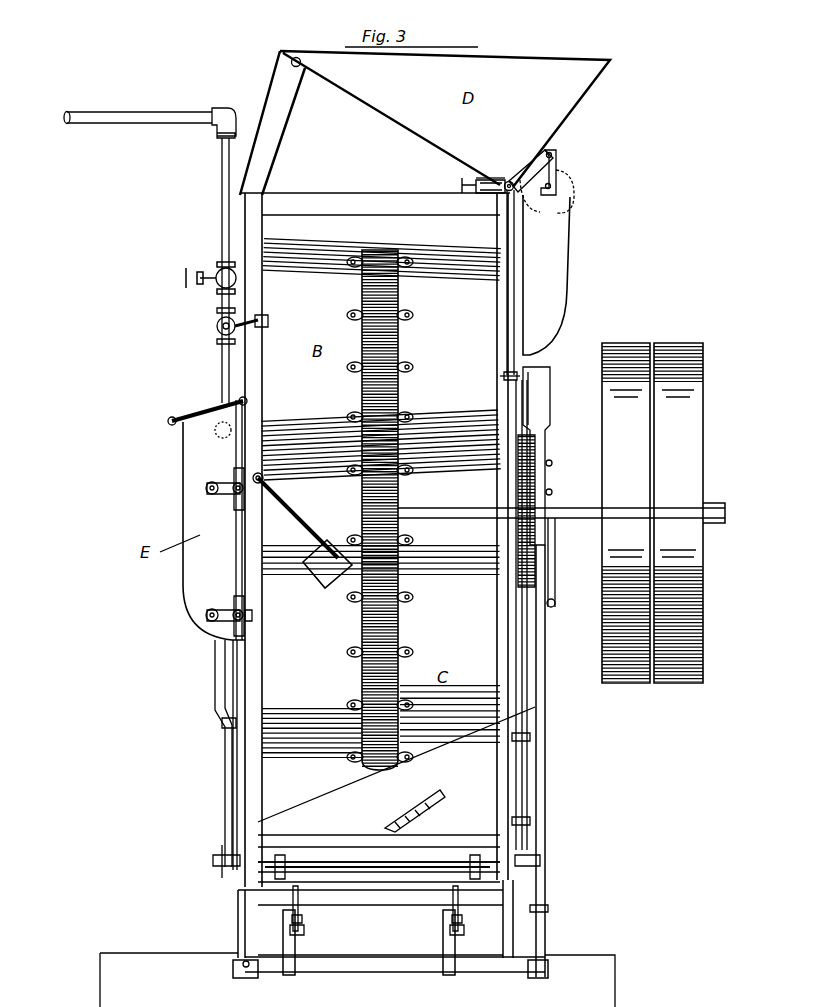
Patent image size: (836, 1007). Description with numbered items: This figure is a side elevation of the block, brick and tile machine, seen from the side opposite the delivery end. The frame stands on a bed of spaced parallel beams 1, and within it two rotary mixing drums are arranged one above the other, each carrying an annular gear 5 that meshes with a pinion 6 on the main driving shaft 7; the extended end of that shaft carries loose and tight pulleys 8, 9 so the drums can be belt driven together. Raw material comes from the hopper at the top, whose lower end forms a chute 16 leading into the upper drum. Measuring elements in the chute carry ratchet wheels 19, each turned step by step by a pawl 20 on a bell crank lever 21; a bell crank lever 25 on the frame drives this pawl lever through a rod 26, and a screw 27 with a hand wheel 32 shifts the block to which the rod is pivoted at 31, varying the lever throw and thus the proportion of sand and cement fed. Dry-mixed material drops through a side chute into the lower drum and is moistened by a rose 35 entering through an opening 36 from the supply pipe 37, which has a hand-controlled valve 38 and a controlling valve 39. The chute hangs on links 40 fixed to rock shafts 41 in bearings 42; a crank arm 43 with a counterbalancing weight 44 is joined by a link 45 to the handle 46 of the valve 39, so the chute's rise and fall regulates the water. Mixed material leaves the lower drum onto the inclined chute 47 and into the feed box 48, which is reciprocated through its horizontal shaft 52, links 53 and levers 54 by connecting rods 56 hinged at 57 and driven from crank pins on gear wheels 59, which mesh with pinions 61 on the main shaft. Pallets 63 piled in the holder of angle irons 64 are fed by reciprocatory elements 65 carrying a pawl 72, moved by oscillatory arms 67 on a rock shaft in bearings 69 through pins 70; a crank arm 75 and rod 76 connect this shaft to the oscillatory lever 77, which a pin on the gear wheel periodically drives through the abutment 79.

The beams 1 is at (238, 922).
The annular gear 5 is at (400, 346).
The pinion 6 is at (398, 491).
The main driving shaft 7 is at (475, 510).
The loose pulley 8 is at (622, 343).
The tight pulley 9 is at (678, 343).
The chute 16 is at (553, 262).
The ratchet wheel 19 is at (576, 183).
The pawl 20 is at (555, 152).
The bell crank lever 21 is at (518, 180).
The bell crank lever 25 is at (508, 378).
The rod 26 is at (515, 320).
The screw 27 is at (468, 178).
The pivot 31 is at (505, 193).
The hand wheel 32 is at (460, 185).
The rose 35 is at (222, 438).
The opening 36 is at (215, 410).
The supply pipe 37 is at (222, 356).
The hand-controlled valve 38 is at (218, 272).
The valve 39 is at (216, 326).
The links 40 is at (228, 634).
The rock shaft 41 is at (228, 495).
The bearings 42 is at (252, 618).
The crank arm 43 is at (300, 530).
The weight 44 is at (322, 580).
The link 45 is at (260, 386).
The handle 46 is at (268, 322).
The inclined chute 47 is at (429, 791).
The feed box 48 is at (379, 858).
The horizontal shaft 52 is at (375, 868).
The links 53 is at (232, 860).
The levers 54 is at (233, 748).
The connecting rods 56 is at (218, 688).
The hinge connection 57 is at (222, 722).
The gear wheels 59 is at (540, 445).
The pinions 61 is at (548, 500).
The pallets 63 is at (385, 880).
The angle irons 64 is at (243, 762).
The reciprocatory elements 65 is at (302, 918).
The oscillatory arms 67 is at (296, 945).
The bearings 69 is at (250, 978).
The pins 70 is at (305, 930).
The pawl 72 is at (298, 905).
The crank arm 75 is at (546, 935).
The rod 76 is at (545, 847).
The oscillatory lever 77 is at (551, 400).
The abutment 79 is at (552, 465).